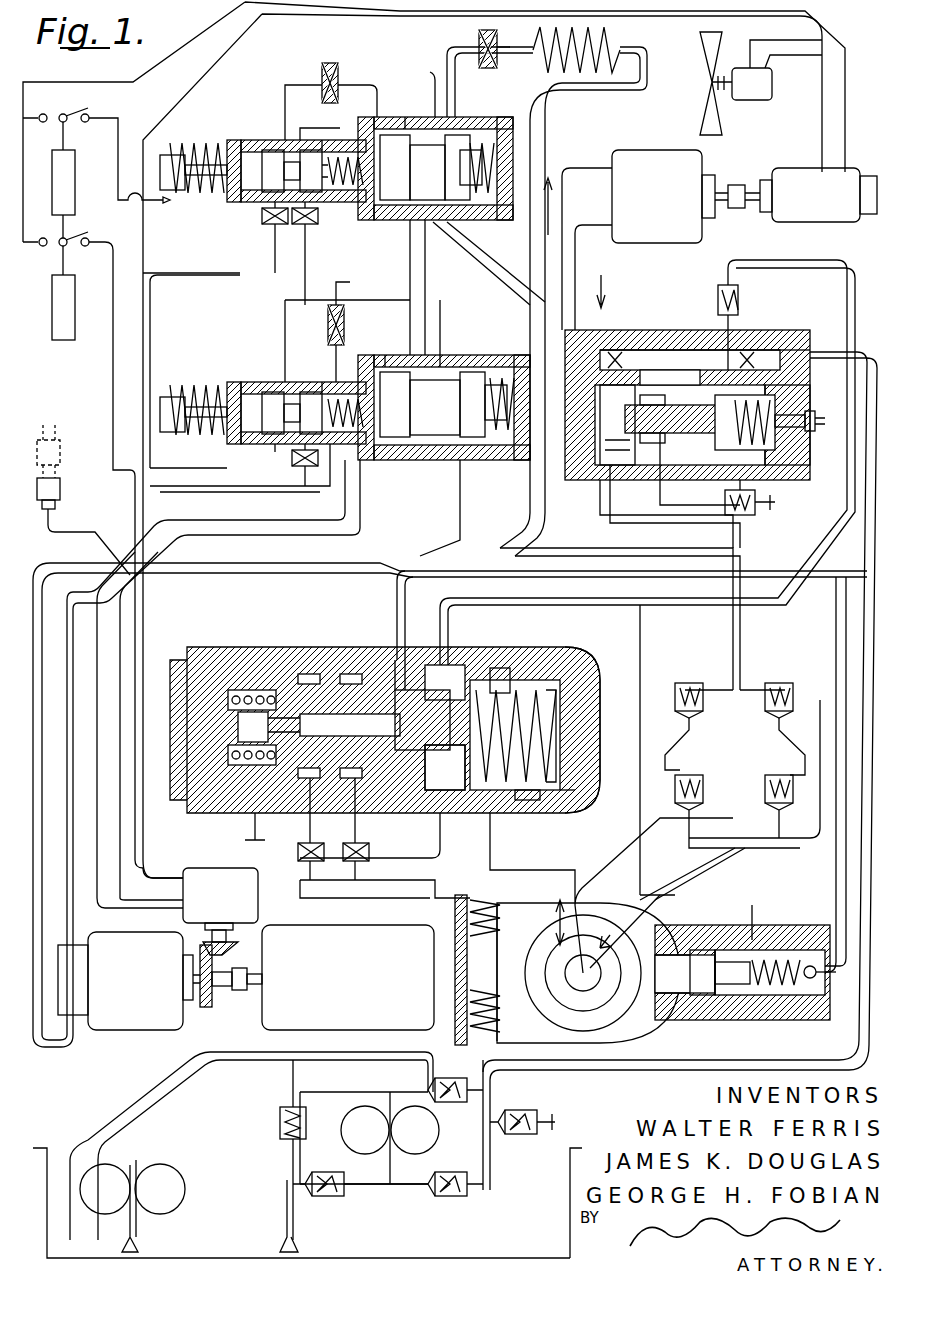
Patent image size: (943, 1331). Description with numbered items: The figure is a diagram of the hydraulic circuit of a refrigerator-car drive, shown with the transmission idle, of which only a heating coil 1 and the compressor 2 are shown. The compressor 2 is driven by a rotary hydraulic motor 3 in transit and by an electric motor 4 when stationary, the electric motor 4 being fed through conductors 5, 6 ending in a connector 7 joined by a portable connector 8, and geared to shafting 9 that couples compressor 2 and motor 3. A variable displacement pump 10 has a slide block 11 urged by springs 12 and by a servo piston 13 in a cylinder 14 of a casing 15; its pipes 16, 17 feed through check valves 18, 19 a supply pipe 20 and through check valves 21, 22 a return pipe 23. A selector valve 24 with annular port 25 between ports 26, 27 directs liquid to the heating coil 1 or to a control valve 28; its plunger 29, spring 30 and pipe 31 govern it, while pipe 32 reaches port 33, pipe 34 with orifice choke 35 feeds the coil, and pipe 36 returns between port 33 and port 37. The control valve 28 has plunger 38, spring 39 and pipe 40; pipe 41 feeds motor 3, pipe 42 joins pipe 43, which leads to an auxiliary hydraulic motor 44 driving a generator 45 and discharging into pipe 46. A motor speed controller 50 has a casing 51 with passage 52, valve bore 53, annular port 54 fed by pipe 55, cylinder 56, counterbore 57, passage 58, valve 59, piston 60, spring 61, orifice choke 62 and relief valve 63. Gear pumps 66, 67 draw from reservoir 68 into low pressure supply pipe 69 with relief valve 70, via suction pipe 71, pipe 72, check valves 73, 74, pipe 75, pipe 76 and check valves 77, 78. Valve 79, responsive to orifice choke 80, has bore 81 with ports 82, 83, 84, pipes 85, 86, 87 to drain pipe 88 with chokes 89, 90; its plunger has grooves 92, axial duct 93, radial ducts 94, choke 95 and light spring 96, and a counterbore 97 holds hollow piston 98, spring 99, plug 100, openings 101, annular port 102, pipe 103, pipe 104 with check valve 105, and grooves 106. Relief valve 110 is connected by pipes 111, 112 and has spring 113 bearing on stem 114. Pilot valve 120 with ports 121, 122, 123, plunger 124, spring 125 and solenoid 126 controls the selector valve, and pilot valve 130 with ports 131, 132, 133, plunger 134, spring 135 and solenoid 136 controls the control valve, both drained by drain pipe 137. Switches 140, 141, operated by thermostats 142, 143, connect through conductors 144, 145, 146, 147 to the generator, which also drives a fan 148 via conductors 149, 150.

The heating coil 1 is at (605, 33).
The compressor 2 is at (348, 977).
The rotary hydraulic motor 3 is at (129, 981).
The electric motor 4 is at (220, 905).
The conductor 5 is at (134, 910).
The conductor 6 is at (146, 880).
The connector 7 is at (62, 490).
The portable connector 8 is at (62, 448).
The shafting 9 is at (220, 990).
The variable displacement pump 10 is at (588, 978).
The slide block 11 is at (514, 973).
The springs 12 is at (476, 984).
The piston 13 is at (698, 950).
The cylinder 14 is at (665, 1000).
The casing 15 is at (740, 1020).
The pipe 16 is at (676, 746).
The pipe 17 is at (795, 750).
The check valve 18 is at (700, 710).
The check valve 19 is at (794, 704).
The supply pipe 20 is at (492, 278).
The check valve 21 is at (698, 780).
The check valve 22 is at (764, 800).
The return pipe 23 is at (840, 350).
The selector valve 24 is at (415, 60).
The annular port 25 is at (419, 93).
The port 26 is at (412, 128).
The port 27 is at (455, 110).
The control valve 28 is at (498, 326).
The plunger 29 is at (425, 167).
The spring 30 is at (484, 128).
The pipe 31 is at (318, 72).
The pipe 32 is at (410, 302).
The annular port 33 is at (392, 366).
The pipe 34 is at (470, 48).
The orifice choke 35 is at (494, 44).
The pipe 36 is at (618, 100).
The port 37 is at (460, 360).
The plunger 38 is at (432, 404).
The spring 39 is at (492, 368).
The pipe 40 is at (374, 350).
The pipe 41 is at (380, 506).
The pipe 42 is at (462, 506).
The pipe 43 is at (594, 142).
The auxiliary hydraulic motor 44 is at (686, 197).
The electric generator 45 is at (818, 195).
The pipe 46 is at (598, 266).
The motor speed controller 50 is at (680, 300).
The casing 51 is at (790, 332).
The longitudinal passage 52 is at (700, 334).
The valve bore 53 is at (634, 480).
The annular port 54 is at (686, 372).
The pipe 55 is at (660, 522).
The cylinder 56 is at (615, 478).
The counterbore 57 is at (804, 376).
The unrestricted passage 58 is at (738, 358).
The valve 59 is at (675, 419).
The piston 60 is at (584, 398).
The helical compression spring 61 is at (790, 470).
The orifice choke 62 is at (612, 336).
The relief valve 63 is at (748, 512).
The gear pump 66 is at (360, 1118).
The gear pump 67 is at (165, 1170).
The reservoir 68 is at (562, 1252).
The low pressure supply pipe 69 is at (604, 1080).
The low pressure relief valve 70 is at (514, 1140).
The suction pipe 71 is at (142, 1232).
The pipe 72 is at (250, 1098).
The check valve 73 is at (446, 1104).
The check valve 74 is at (284, 1142).
The pipe 75 is at (285, 1222).
The pipe 76 is at (412, 1192).
The check valve 77 is at (462, 1198).
The check valve 78 is at (326, 1198).
The valve 79 is at (320, 612).
The orifice choke 80 is at (748, 346).
The axial bore 81 is at (218, 660).
The port 82 is at (390, 660).
The port 83 is at (362, 660).
The port 84 is at (320, 660).
The pipe 85 is at (466, 572).
The pipe 86 is at (542, 870).
The pipe 87 is at (357, 826).
The drain pipe 88 is at (240, 273).
The choke 89 is at (304, 842).
The choke 90 is at (370, 852).
The longitudinal grooves 92 is at (308, 724).
The axial duct 93 is at (266, 690).
The radial ducts 94 is at (406, 720).
The choke 95 is at (270, 726).
The light spring 96 is at (230, 780).
The counterbore 97 is at (492, 668).
The hollow piston 98 is at (538, 680).
The helical compression spring 99 is at (576, 796).
The plug 100 is at (582, 660).
The openings 101 is at (500, 680).
The annular port 102 is at (540, 800).
The pipe 103 is at (486, 866).
The pipe 104 is at (834, 262).
The check valve 105 is at (740, 286).
The small grooves 106 is at (440, 795).
The relief valve 110 is at (808, 1020).
The pipe 111 is at (836, 868).
The pipe 112 is at (642, 636).
The spring 113 is at (772, 950).
The stem 114 is at (733, 973).
The pilot valve 120 is at (280, 106).
The port 121 is at (262, 145).
The port 122 is at (282, 130).
The port 123 is at (300, 138).
The plunger 124 is at (240, 195).
The spring 125 is at (330, 148).
The solenoid 126 is at (208, 150).
The pilot valve 130 is at (240, 326).
The port 131 is at (300, 380).
The port 132 is at (290, 448).
The port 133 is at (266, 388).
The plunger 134 is at (240, 420).
The spring 135 is at (336, 384).
The solenoid 136 is at (206, 388).
The drain pipe 137 is at (318, 486).
The electric switch 140 is at (70, 125).
The electric switch 141 is at (70, 248).
The thermostat 142 is at (70, 190).
The thermostat 143 is at (62, 340).
The conductor 144 is at (160, 62).
The conductor 145 is at (104, 118).
The conductor 146 is at (200, 88).
The conductor 147 is at (112, 388).
The electric fan 148 is at (736, 83).
The conductor 149 is at (806, 58).
The conductor 150 is at (796, 38).